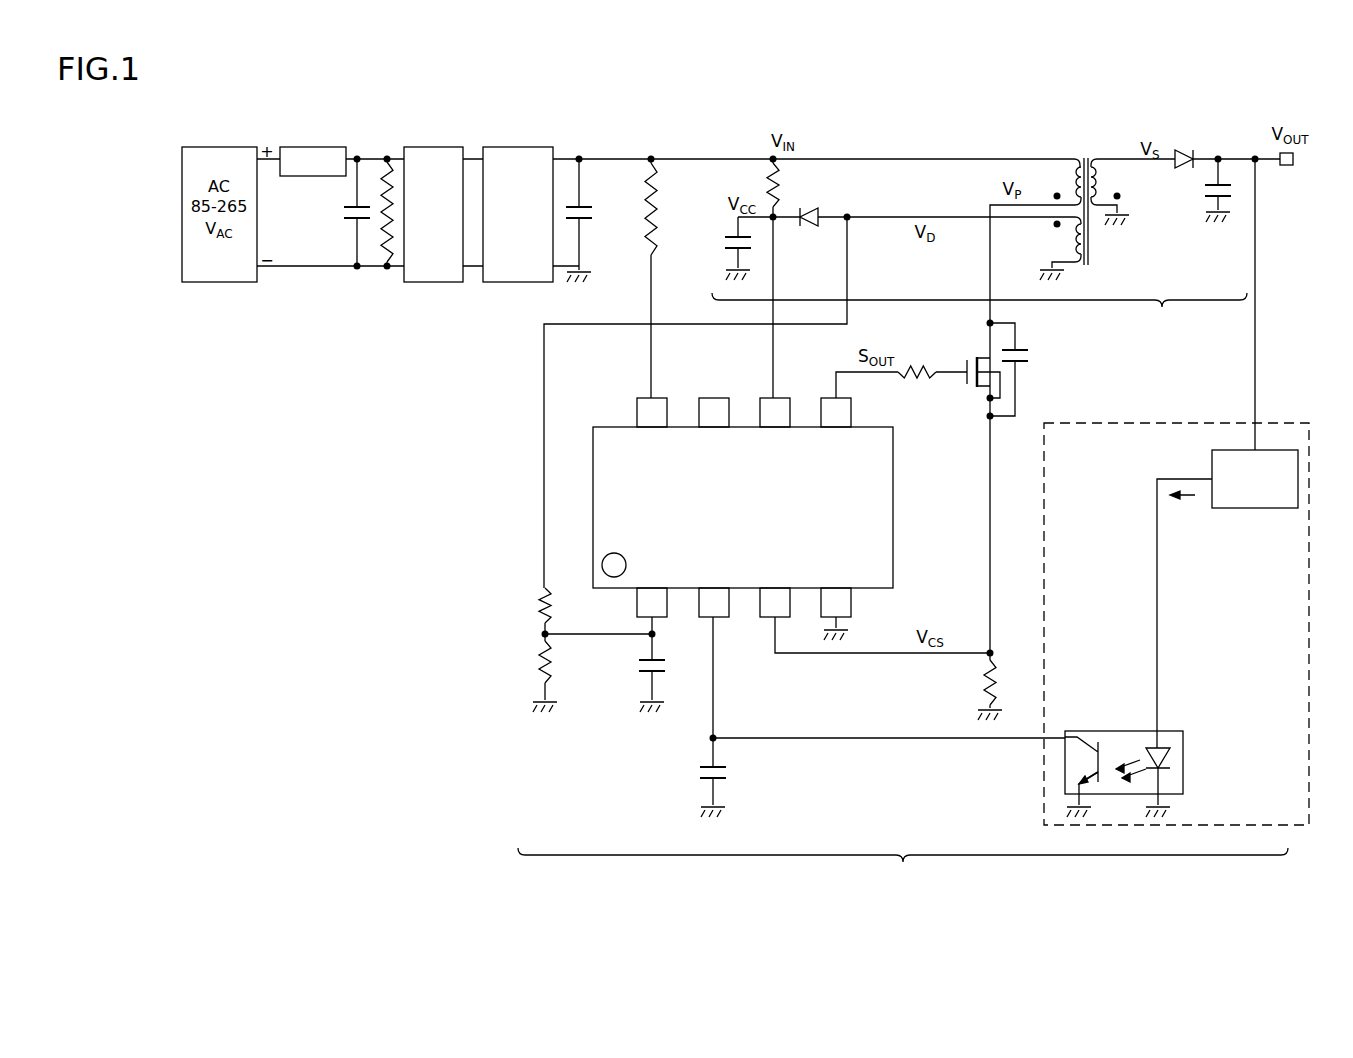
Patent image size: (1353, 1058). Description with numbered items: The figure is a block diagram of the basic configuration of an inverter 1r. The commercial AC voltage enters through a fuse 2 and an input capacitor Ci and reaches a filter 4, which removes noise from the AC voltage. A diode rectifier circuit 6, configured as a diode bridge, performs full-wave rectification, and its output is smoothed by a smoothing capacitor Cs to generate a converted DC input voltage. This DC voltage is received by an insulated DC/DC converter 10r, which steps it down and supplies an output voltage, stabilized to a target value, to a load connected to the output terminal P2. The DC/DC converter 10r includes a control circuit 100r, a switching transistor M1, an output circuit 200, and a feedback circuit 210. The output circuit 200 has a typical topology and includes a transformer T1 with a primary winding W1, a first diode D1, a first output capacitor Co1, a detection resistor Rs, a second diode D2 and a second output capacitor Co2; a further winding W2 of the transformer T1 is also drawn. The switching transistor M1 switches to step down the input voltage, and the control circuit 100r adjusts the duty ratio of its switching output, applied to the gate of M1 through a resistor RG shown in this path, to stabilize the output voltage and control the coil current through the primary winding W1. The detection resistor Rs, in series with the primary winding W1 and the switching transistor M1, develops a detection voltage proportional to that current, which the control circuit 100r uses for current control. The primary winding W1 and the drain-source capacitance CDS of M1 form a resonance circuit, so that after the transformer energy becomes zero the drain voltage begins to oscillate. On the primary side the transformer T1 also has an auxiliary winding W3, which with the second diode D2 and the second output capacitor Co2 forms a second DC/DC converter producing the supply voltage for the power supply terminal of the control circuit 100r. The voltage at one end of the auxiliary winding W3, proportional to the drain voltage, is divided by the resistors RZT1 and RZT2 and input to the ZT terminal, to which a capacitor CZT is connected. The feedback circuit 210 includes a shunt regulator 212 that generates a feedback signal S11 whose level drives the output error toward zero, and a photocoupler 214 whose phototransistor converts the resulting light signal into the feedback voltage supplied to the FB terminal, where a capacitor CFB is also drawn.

The inverter 1r is at (771, 890).
The fuse 2 is at (322, 144).
The filter 4 is at (434, 144).
The diode rectifier circuit 6 is at (519, 144).
The DC/DC converter 10r is at (903, 869).
The control circuit 100r is at (895, 503).
The output circuit 200 is at (979, 313).
The feedback circuit 210 is at (1269, 423).
The shunt regulator 212 is at (1262, 510).
The photocoupler 214 is at (1192, 708).
The transformer T1 is at (1082, 367).
The primary winding W1 is at (1070, 150).
The secondary winding W2 is at (1100, 150).
The auxiliary winding W3 is at (1054, 242).
The first diode D1 is at (1191, 145).
The second diode D2 is at (818, 205).
The first output capacitor Co1 is at (1198, 208).
The second output capacitor Co2 is at (726, 250).
The input capacitor Ci is at (342, 212).
The smoothing capacitor Cs is at (593, 212).
The drain-source capacitance CDS is at (1035, 357).
The switching transistor M1 is at (968, 398).
The gate resistor RG is at (915, 382).
The detection resistor Rs is at (978, 689).
The resistor RZT1 is at (538, 600).
The resistor RZT2 is at (538, 660).
The capacitor CZT is at (638, 668).
The feedback capacitor CFB is at (730, 771).
The output terminal P2 is at (1287, 168).
The feedback signal S11 is at (1183, 507).